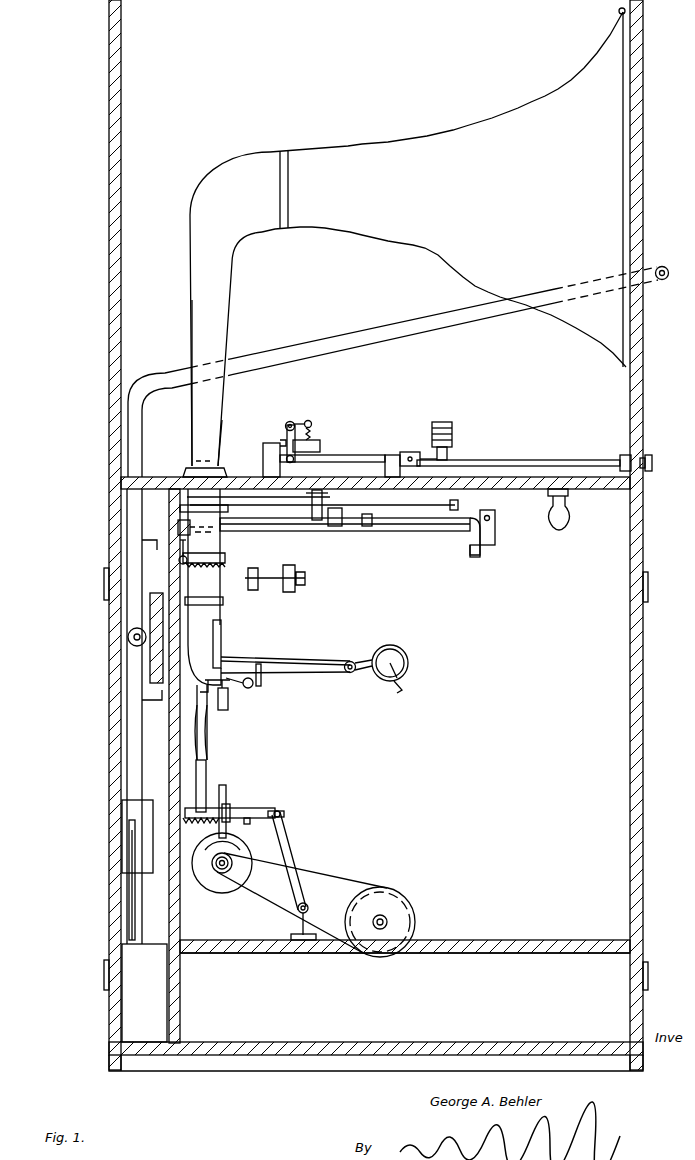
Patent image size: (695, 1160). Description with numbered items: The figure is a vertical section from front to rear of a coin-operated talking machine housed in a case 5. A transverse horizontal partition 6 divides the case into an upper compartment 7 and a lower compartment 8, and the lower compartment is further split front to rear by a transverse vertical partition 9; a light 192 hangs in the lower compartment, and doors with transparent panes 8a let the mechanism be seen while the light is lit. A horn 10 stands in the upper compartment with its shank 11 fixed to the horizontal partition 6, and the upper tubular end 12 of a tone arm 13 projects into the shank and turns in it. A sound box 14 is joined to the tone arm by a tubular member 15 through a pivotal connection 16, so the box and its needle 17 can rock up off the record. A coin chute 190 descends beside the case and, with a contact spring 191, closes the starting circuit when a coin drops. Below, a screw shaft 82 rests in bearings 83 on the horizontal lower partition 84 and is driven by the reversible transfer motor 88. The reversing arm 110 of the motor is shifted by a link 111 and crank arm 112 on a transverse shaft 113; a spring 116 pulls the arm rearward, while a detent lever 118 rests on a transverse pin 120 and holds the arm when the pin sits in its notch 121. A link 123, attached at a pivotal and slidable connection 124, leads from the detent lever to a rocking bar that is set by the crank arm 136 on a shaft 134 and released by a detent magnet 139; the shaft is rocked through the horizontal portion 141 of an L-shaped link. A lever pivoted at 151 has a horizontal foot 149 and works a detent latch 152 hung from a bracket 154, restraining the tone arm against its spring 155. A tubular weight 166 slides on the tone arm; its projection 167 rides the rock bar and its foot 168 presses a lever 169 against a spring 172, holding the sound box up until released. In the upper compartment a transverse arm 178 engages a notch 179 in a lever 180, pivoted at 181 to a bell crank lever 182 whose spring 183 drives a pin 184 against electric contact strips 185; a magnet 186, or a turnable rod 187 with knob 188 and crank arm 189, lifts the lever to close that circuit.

The case 5 is at (641, 402).
The transverse horizontal partition 6 is at (587, 492).
The upper compartment 7 is at (356, 438).
The lower compartment 8 is at (376, 766).
The transparent panes 8a is at (643, 756).
The transverse vertical partition 9 is at (172, 764).
The horn 10 is at (408, 237).
The shank 11 is at (207, 383).
The upper tubular end 12 is at (196, 500).
The tone arm 13 is at (297, 660).
The sound box 14 is at (409, 659).
The tubular member 15 is at (366, 658).
The pivotal connection 16 is at (350, 661).
The needle 17 is at (403, 689).
The screw shaft 82 is at (392, 922).
The bearings 83 is at (376, 922).
The horizontal lower partition 84 is at (548, 940).
The transfer motor 88 is at (222, 893).
The reversing arm 110 is at (228, 790).
The link 111 is at (282, 816).
The crank arm 112 is at (290, 855).
The transverse shaft 113 is at (307, 906).
The spring 116 is at (200, 824).
The detent lever 118 is at (268, 811).
The transverse pin 120 is at (228, 815).
The notch 121 is at (246, 824).
The link 123 is at (206, 778).
The pivotal and slidable connection 124 is at (170, 803).
The shaft 134 is at (432, 533).
The crank arm 136 is at (176, 527).
The detent magnet 139 is at (180, 558).
The horizontal portion of L-shaped link 141 is at (473, 560).
The horizontal foot 149 is at (462, 556).
The pivot 151 is at (369, 529).
The detent latch 152 is at (333, 530).
The bracket 154 is at (313, 500).
The spring 155 is at (204, 575).
The tubular weight 166 is at (218, 608).
The projection 167 is at (180, 566).
The foot 168 is at (221, 650).
The lever 169 is at (293, 673).
The spring 172 is at (224, 706).
The transverse arm 178 is at (405, 455).
The notch 179 is at (388, 458).
The lever 180 is at (347, 456).
The pivot 181 is at (270, 462).
The bell crank lever 182 is at (305, 424).
The spring 183 is at (316, 441).
The pin 184 is at (289, 430).
The electric contact strips 185 is at (280, 441).
The magnet 186 is at (453, 437).
The turnable rod 187 is at (555, 466).
The knob 188 is at (653, 463).
The crank arm 189 is at (322, 501).
The coin chute 190 is at (462, 320).
The contact spring 191 is at (128, 902).
The lamp 192 is at (552, 511).